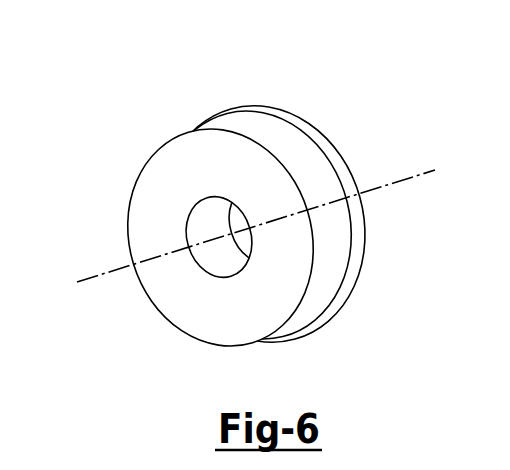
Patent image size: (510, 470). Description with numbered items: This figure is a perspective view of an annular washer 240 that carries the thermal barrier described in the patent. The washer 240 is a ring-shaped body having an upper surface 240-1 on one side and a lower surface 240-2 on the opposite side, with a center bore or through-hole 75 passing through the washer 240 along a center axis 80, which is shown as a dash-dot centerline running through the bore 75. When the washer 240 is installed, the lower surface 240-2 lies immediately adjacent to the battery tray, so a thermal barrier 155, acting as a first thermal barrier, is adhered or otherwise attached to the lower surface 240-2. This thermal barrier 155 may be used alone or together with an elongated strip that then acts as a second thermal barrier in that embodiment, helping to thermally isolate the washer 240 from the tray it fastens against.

The annular washer 240 is at (352, 131).
The upper surface 240-1 is at (158, 165).
The lower surface 240-2 is at (294, 128).
The thermal barrier 155 is at (316, 341).
The center bore 75 is at (223, 256).
The center axis 80 is at (90, 283).